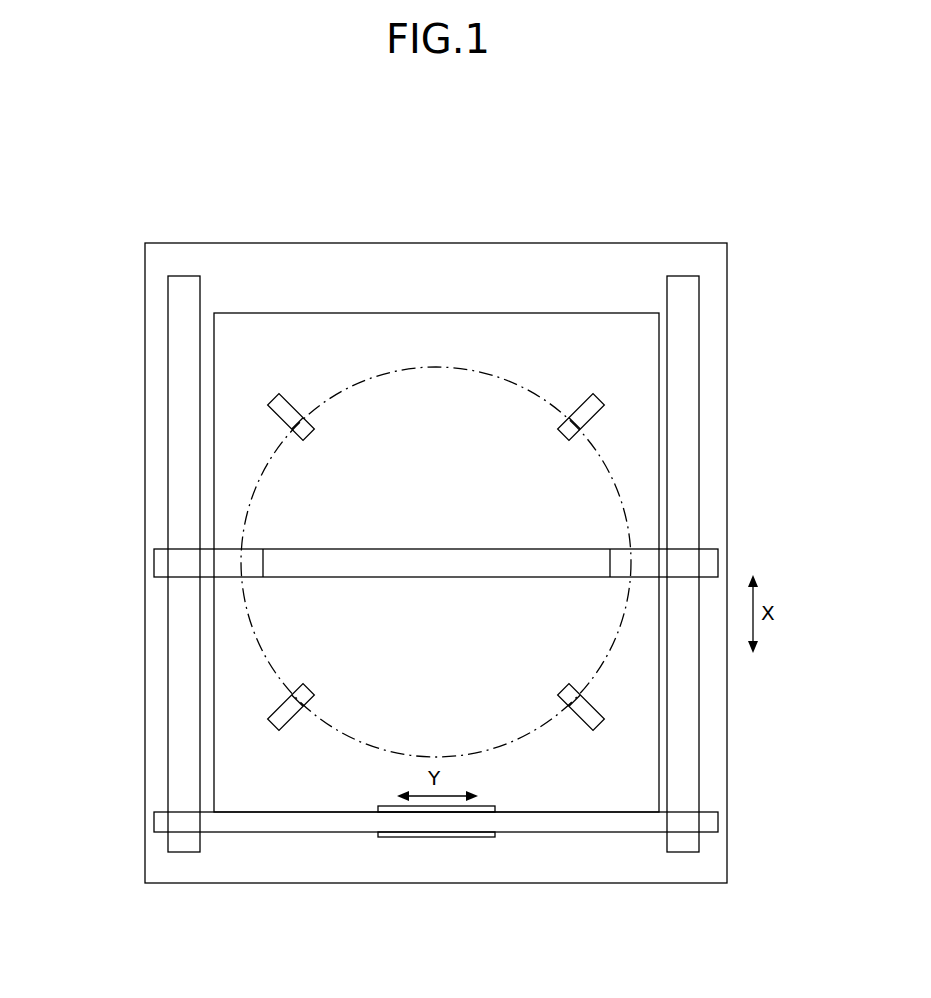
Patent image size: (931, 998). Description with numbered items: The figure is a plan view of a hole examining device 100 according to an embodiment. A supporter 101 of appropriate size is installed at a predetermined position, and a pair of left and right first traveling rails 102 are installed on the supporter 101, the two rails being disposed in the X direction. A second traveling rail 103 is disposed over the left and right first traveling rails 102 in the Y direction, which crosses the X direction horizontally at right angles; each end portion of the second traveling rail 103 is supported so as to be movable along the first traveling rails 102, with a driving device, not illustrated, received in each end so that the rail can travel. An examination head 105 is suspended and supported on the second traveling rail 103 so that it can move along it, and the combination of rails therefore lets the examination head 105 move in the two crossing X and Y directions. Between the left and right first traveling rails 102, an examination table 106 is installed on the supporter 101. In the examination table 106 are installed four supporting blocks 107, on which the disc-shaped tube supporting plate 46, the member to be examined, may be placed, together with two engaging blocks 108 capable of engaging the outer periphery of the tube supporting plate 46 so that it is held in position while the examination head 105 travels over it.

The hole examining device 100 is at (426, 172).
The supporter 101 is at (600, 878).
The first traveling rails 102 is at (178, 425).
The second traveling rail 103 is at (308, 833).
The examination head 105 is at (437, 848).
The examination table 106 is at (590, 312).
The supporting blocks 107 is at (290, 403).
The engaging blocks 108 is at (236, 565).
The tube supporting plate 46 is at (481, 380).